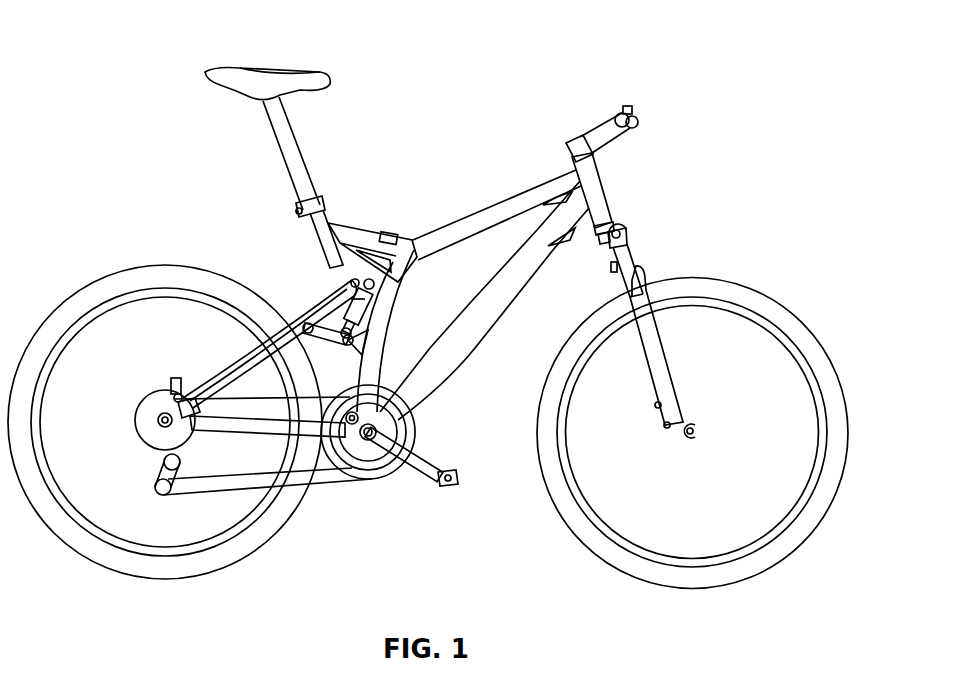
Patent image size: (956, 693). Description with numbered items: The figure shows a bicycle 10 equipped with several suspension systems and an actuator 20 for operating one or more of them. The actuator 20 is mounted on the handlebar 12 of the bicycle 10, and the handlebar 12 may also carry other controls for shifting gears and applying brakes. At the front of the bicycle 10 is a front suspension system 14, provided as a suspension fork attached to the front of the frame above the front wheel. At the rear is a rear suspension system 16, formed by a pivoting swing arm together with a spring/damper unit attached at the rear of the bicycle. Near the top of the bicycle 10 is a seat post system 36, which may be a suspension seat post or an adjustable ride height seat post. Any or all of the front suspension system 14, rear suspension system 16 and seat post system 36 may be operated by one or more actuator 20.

The bicycle 10 is at (393, 66).
The handlebar 12 is at (647, 126).
The front suspension system 14 is at (650, 244).
The rear suspension system 16 is at (318, 274).
The actuator 20 is at (633, 108).
The seat post system 36 is at (312, 172).